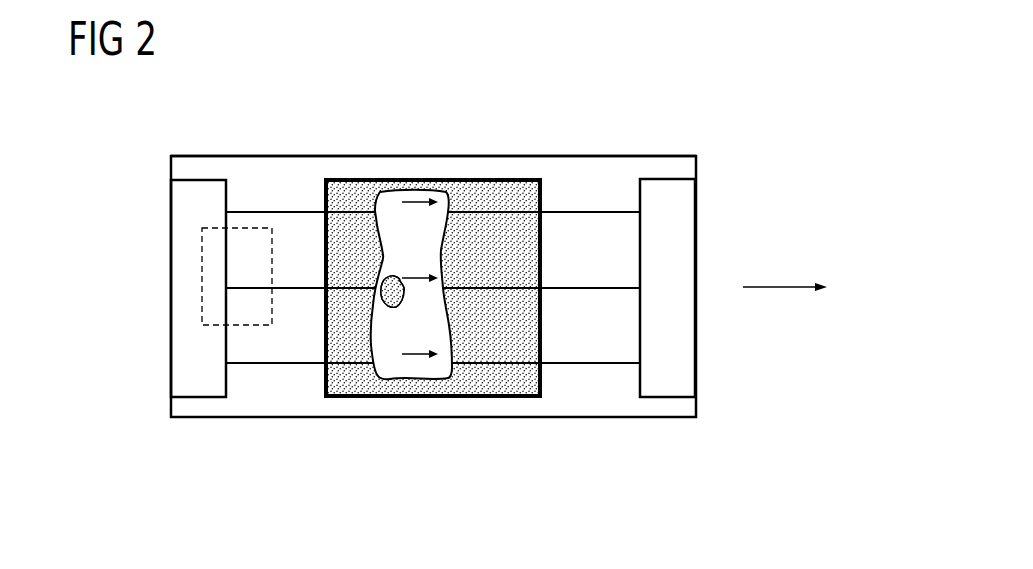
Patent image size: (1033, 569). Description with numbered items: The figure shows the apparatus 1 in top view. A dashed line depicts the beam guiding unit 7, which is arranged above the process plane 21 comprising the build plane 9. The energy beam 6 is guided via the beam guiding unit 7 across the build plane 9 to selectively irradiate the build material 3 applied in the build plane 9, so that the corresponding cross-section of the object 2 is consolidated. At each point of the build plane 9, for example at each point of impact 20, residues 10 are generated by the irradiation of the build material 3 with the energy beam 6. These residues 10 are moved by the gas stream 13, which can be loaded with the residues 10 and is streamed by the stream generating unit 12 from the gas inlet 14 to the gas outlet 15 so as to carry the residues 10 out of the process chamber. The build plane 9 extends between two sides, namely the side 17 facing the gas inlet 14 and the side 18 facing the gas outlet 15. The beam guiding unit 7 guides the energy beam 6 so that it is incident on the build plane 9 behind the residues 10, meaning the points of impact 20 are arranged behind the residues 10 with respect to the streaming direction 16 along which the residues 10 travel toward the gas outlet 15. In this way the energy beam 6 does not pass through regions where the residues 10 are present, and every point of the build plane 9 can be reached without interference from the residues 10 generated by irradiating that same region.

The apparatus 1 is at (752, 120).
The object 2 is at (430, 380).
The build material 3 is at (500, 386).
The energy beam 6 is at (386, 311).
The beam guiding unit 7 is at (254, 202).
The build plane 9 is at (495, 188).
The residues 10 is at (396, 278).
The stream generating unit 12 is at (200, 145).
The gas stream 13 is at (582, 212).
The gas inlet 14 is at (192, 397).
The gas outlet 15 is at (667, 397).
The streaming direction 16 is at (770, 288).
The side facing the gas inlet 17 is at (323, 363).
The side facing the gas outlet 18 is at (543, 365).
The point of impact 20 is at (397, 306).
The process plane 21 is at (398, 157).